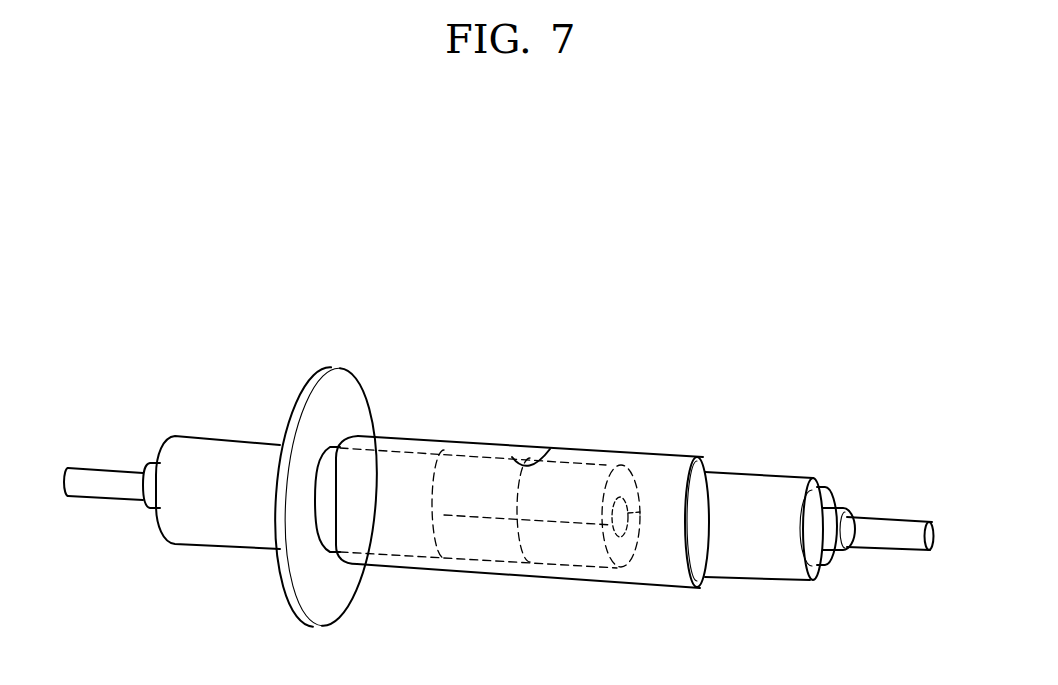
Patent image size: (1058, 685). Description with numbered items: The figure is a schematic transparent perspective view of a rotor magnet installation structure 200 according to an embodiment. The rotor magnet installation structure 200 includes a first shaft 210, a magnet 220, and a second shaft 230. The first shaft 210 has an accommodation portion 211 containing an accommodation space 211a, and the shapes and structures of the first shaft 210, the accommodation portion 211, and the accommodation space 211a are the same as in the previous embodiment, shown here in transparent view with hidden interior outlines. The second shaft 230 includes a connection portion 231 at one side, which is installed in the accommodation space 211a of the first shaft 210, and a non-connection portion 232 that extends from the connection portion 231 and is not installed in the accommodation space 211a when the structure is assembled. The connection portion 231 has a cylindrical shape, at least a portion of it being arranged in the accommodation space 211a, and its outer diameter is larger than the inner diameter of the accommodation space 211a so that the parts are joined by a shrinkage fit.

The rotor magnet installation structure 200 is at (676, 308).
The first shaft 210 is at (749, 484).
The accommodation portion 211 is at (451, 442).
The accommodation space 211a is at (549, 448).
The magnet 220 is at (482, 545).
The second shaft 230 is at (222, 301).
The connection portion 231 is at (396, 450).
The non-connection portion 232 is at (233, 455).